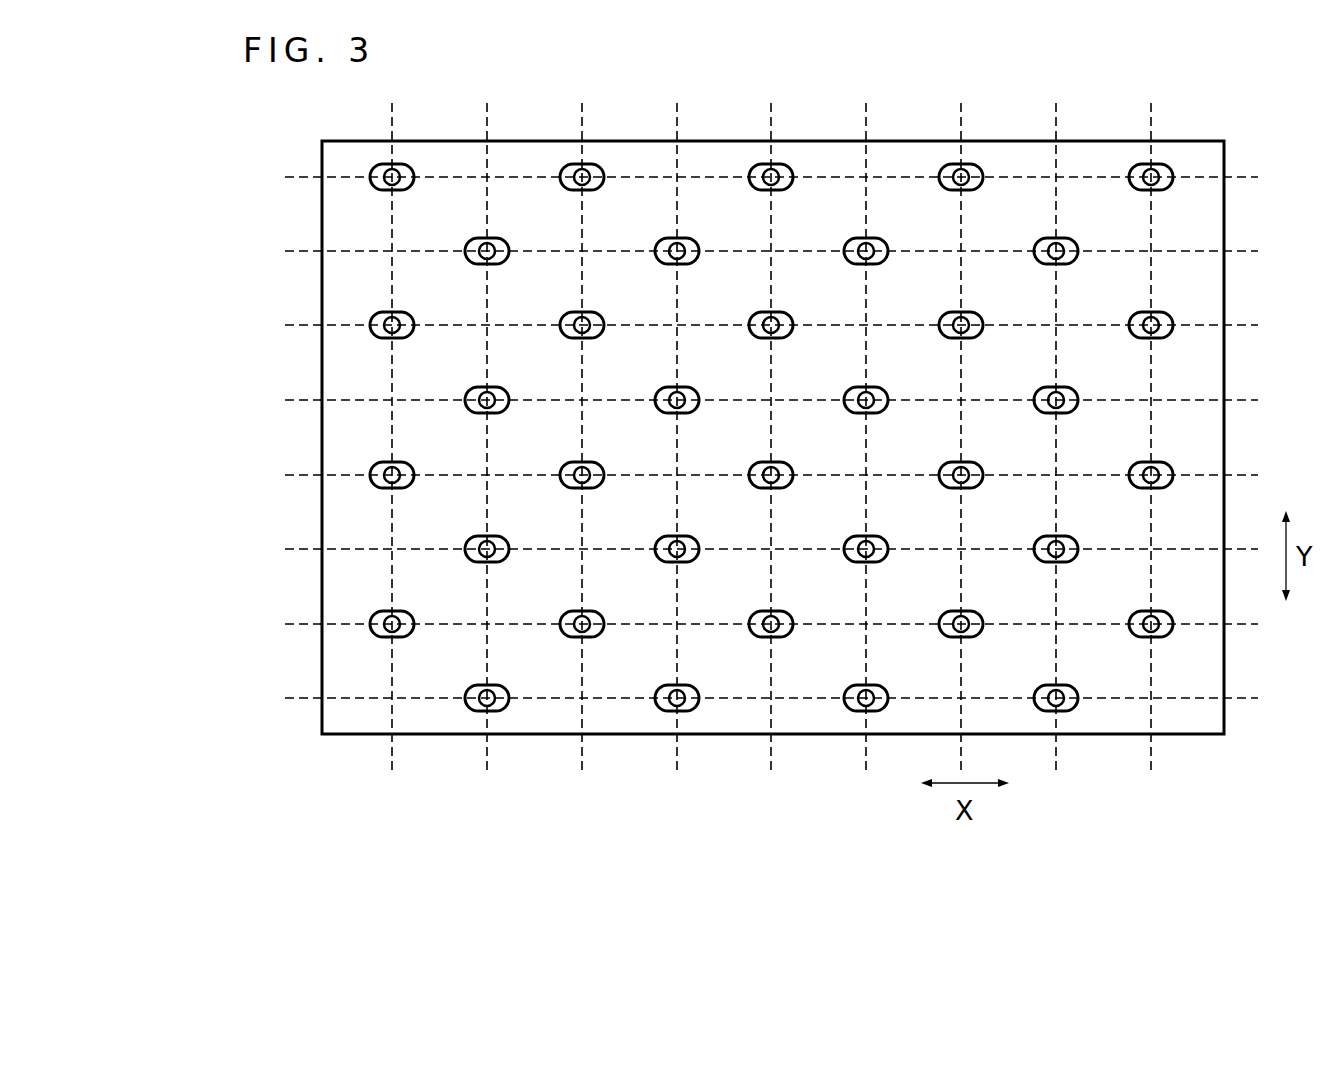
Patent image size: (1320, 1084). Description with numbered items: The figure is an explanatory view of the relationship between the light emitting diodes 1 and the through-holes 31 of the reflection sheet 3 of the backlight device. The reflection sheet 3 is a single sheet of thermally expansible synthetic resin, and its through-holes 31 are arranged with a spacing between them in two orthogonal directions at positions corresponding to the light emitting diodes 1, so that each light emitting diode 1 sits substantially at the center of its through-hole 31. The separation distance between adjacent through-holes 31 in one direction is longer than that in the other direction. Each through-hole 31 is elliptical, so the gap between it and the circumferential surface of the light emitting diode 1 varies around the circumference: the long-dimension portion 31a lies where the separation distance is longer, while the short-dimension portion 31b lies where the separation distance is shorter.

The light emitting diode 1 is at (667, 540).
The reflection sheet 3 is at (1232, 432).
The through-hole 31 is at (686, 538).
The long-dimension portion 31a is at (653, 711).
The short-dimension portion 31b is at (669, 562).